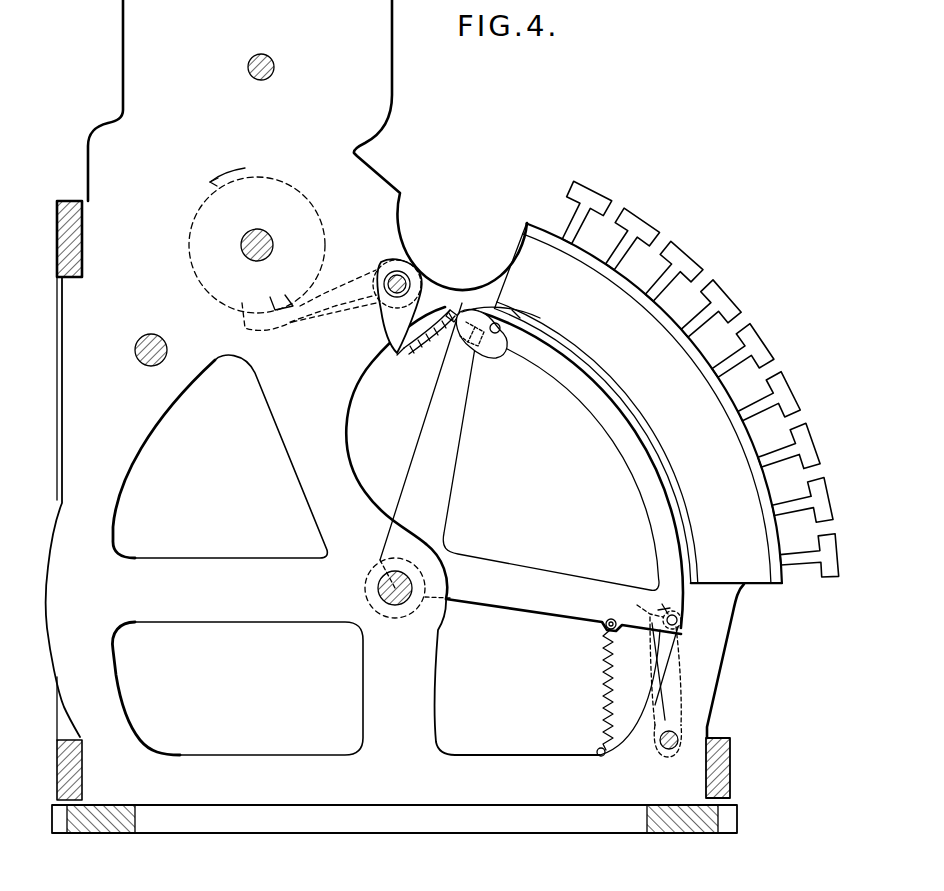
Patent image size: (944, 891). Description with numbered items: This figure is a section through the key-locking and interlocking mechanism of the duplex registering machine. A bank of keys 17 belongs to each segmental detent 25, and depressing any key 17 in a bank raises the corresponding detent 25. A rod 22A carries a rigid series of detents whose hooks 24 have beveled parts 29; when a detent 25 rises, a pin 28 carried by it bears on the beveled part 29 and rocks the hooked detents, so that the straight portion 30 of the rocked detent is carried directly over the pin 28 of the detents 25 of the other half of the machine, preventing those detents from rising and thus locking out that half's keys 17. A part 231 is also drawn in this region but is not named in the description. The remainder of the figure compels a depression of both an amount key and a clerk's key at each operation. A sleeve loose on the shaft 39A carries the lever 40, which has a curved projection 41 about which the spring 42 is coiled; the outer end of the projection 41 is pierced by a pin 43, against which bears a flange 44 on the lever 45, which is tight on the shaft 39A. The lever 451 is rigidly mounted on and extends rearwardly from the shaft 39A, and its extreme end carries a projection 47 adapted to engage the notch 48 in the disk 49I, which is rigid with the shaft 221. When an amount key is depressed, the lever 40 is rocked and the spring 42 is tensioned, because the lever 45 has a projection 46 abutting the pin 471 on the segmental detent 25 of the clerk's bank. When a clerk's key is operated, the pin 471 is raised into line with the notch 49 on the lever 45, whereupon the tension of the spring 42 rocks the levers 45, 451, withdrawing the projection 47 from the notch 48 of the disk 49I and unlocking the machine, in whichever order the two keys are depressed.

The keys 17 is at (395, 606).
The segmental detent 25 is at (458, 430).
The straight portion 30 is at (626, 613).
The spring 231 is at (622, 693).
The hooks 24 is at (653, 602).
The pin 28 is at (677, 628).
The beveled parts 29 is at (681, 618).
The rod 22A is at (667, 752).
The shaft 221 is at (273, 240).
The disk 49I is at (240, 240).
The notch 48 is at (242, 303).
The projection 47 is at (242, 326).
The lever 451 is at (338, 293).
The shaft 39A is at (394, 270).
The lever 40 is at (381, 330).
The curved projection 41 is at (445, 338).
The spring 42 is at (411, 357).
The flange 44 is at (451, 310).
The pin 43 is at (462, 316).
The lever 45 is at (490, 313).
The projection 46 is at (498, 351).
The notch 49 is at (517, 300).
The pin 471 is at (526, 316).